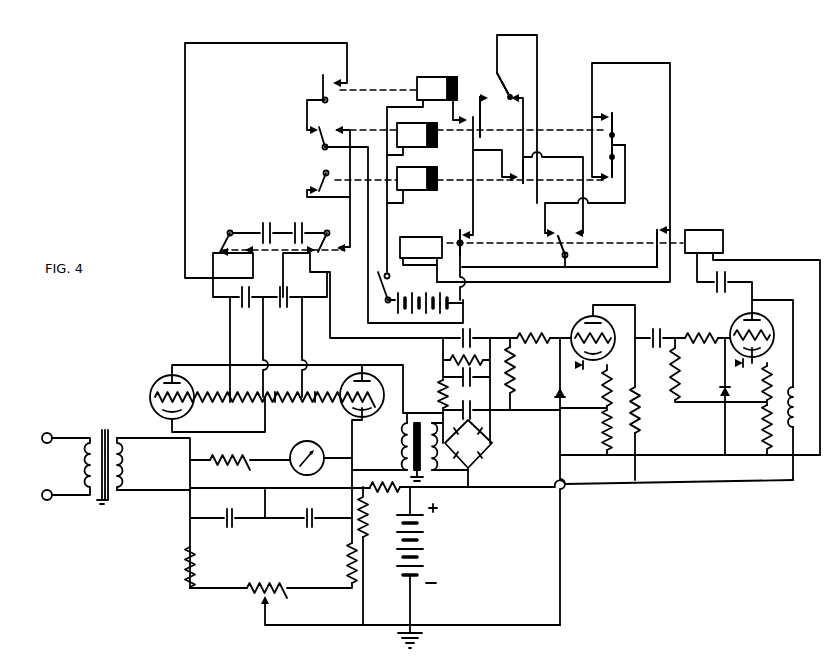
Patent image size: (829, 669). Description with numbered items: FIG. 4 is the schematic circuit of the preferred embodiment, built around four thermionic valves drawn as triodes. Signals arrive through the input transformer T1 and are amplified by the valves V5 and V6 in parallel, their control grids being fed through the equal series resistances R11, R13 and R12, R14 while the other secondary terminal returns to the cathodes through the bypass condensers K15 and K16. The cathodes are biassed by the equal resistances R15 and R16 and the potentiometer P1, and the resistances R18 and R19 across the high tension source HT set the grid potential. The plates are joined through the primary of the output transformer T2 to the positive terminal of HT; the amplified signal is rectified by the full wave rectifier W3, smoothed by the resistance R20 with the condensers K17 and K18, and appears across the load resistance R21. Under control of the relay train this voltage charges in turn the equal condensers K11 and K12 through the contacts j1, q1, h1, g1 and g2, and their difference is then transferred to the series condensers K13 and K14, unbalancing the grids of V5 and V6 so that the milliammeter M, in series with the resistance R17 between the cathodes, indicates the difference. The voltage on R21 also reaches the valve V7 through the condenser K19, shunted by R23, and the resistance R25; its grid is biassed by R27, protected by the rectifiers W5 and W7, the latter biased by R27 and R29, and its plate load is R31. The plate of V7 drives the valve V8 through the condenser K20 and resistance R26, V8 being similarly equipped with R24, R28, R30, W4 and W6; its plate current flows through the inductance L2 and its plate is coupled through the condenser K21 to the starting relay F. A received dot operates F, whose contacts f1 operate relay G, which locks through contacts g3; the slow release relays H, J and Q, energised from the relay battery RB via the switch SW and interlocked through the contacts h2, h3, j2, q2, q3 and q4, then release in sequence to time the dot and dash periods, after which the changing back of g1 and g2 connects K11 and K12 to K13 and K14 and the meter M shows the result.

The contacts of relay J j1 is at (313, 89).
The change-over contacts of relay J j2 is at (488, 84).
The slow release relay J is at (437, 88).
The slow release relay H is at (417, 135).
The change-over contacts of relay H h1 is at (312, 141).
The contacts of relay H h2 is at (623, 125).
The contacts of relay H h3 is at (463, 124).
The slow release relay Q is at (417, 178).
The contacts of relay Q q1 is at (311, 179).
The contacts of relay Q q2 is at (626, 156).
The contacts of relay Q q3 is at (500, 170).
The relay contact q4 is at (453, 237).
The relay G is at (421, 247).
The change-over contacts of relay G g1 is at (221, 235).
The change-over contacts of relay G g2 is at (331, 234).
The contacts of relay G g3 is at (584, 242).
The starting relay F is at (704, 241).
The contacts of relay F f1 is at (656, 240).
The condenser K11 is at (265, 227).
The condenser K12 is at (303, 227).
The condenser K13 is at (253, 306).
The condenser K14 is at (291, 306).
The bypass condenser K15 is at (215, 513).
The bypass condenser K16 is at (292, 513).
The smoothing condenser K17 is at (476, 413).
The smoothing condenser K18 is at (475, 380).
The coupling condenser K19 is at (470, 334).
The coupling condenser K20 is at (668, 318).
The coupling condenser K21 is at (730, 278).
The switch SW is at (378, 293).
The relay battery RB is at (422, 289).
The series resistance R11 is at (265, 406).
The series resistance R12 is at (330, 404).
The series resistance R13 is at (242, 406).
The series resistance R14 is at (283, 406).
The cathode resistance R15 is at (194, 561).
The cathode resistance R16 is at (347, 562).
The meter series resistance R17 is at (230, 455).
The potentiometer resistance R18 is at (368, 544).
The potentiometer resistance R19 is at (385, 495).
The smoothing resistance R20 is at (430, 394).
The load resistance R21 is at (447, 363).
The shunt resistance R23 is at (523, 370).
The resistor R24 is at (670, 368).
The grid resistance R25 is at (534, 328).
The grid coupling resistance R26 is at (701, 354).
The cathode bias resistance R27 is at (595, 388).
The resistance R28 is at (753, 383).
The extra bias resistance R29 is at (594, 430).
The resistance R30 is at (753, 427).
The plate resistance R31 is at (640, 412).
The thermionic valve V5 is at (160, 378).
The thermionic valve V6 is at (364, 398).
The thermionic valve V7 is at (591, 330).
The thermionic valve V8 is at (748, 328).
The full wave rectifier W3 is at (485, 450).
The rectifier W4 is at (725, 380).
The rectifier W5 is at (587, 376).
The rectifier W6 is at (718, 397).
The rectifier W7 is at (547, 387).
The input transformer T1 is at (82, 458).
The output transformer T2 is at (405, 452).
The milliammeter M is at (305, 454).
The high tension source HT is at (418, 528).
The potentiometer P1 is at (267, 583).
The inductance L2 is at (797, 424).